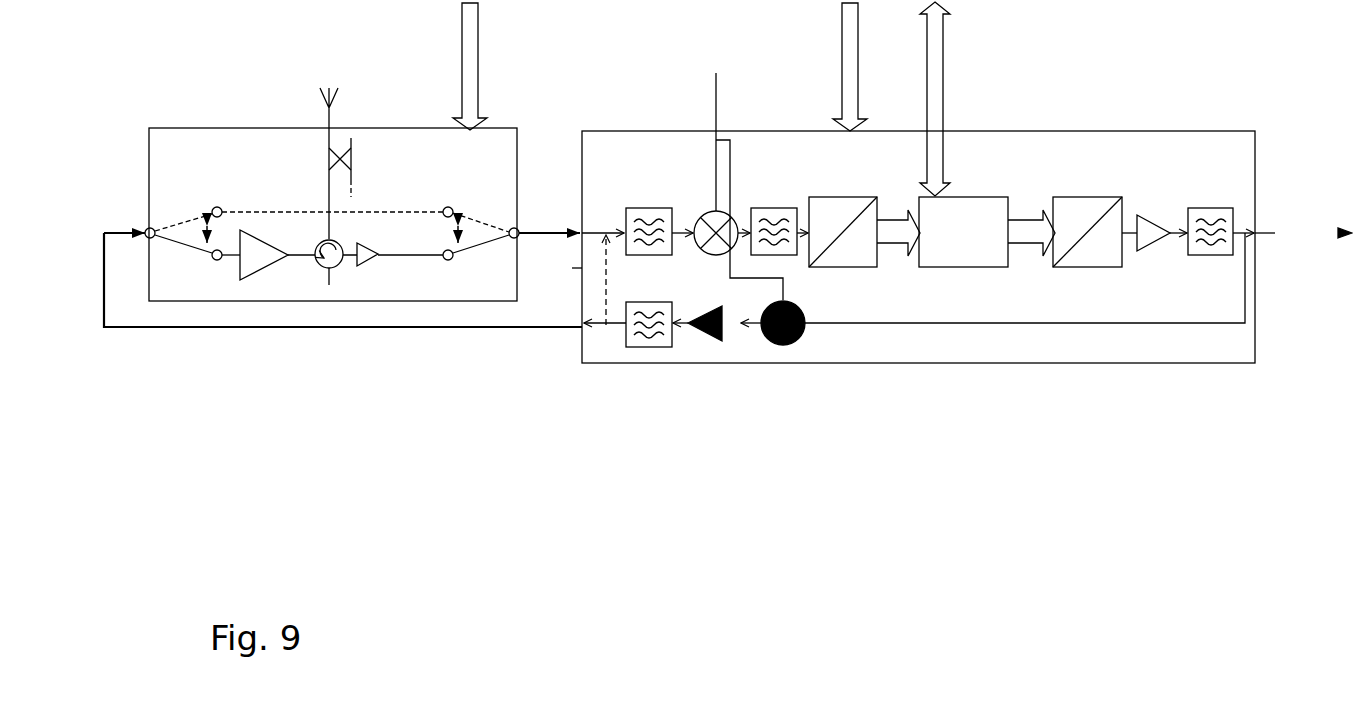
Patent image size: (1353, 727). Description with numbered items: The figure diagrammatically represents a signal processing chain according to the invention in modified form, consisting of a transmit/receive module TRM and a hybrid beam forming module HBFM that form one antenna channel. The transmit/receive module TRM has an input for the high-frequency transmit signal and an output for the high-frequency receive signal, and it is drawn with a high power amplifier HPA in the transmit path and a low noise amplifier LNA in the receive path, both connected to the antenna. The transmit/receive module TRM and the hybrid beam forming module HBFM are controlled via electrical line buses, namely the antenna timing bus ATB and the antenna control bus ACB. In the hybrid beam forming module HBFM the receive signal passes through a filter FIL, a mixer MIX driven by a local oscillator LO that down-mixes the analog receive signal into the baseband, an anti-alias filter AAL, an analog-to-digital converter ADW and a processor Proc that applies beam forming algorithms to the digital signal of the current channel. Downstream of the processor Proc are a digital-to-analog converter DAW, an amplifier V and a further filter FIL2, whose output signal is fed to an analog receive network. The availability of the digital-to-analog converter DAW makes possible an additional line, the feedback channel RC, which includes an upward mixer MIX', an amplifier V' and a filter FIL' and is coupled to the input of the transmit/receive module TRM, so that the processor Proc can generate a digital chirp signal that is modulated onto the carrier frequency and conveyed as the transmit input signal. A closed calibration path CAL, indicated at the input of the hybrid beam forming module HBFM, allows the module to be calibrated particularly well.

The transmit/receive module TRM is at (342, 194).
The high power amplifier HPA is at (264, 269).
The low noise amplifier LNA is at (369, 269).
The feedback channel RC is at (460, 332).
The antenna timing bus ATB is at (661, 67).
The hybrid beam forming module HBFM is at (962, 247).
The closed calibration path CAL is at (605, 280).
The filter FIL is at (638, 169).
The mixer MIX is at (690, 169).
The local oscillator LO is at (742, 173).
The anti-alias filter AAL is at (764, 205).
The analog-to-digital converter ADW is at (871, 195).
The antenna control bus ACB is at (937, 99).
The processor Proc is at (978, 195).
The digital-to-analog converter DAW is at (1081, 195).
The amplifier V is at (1157, 159).
The second filter FIL2 is at (1212, 206).
The filter FIL' is at (631, 362).
The amplifier V' is at (690, 359).
The upward mixer MIX' is at (762, 362).